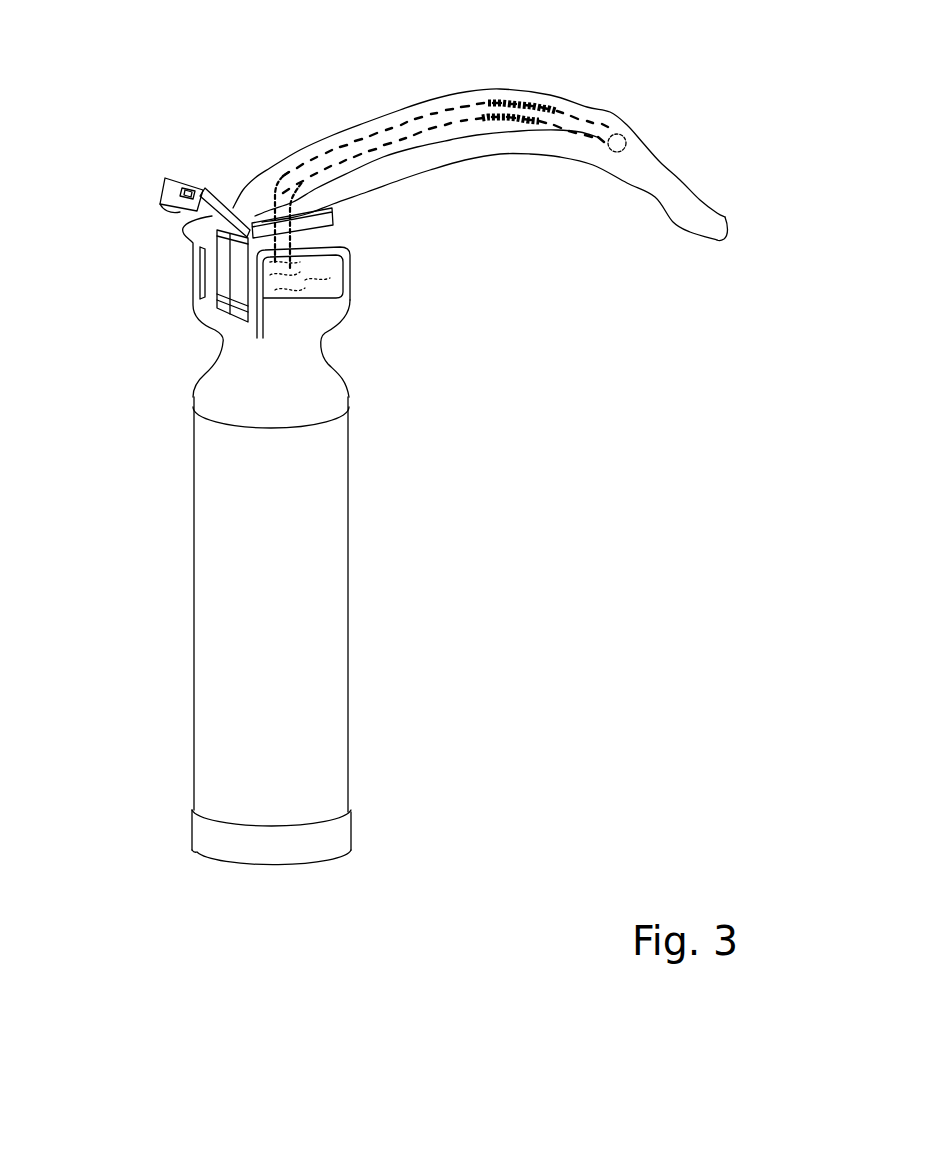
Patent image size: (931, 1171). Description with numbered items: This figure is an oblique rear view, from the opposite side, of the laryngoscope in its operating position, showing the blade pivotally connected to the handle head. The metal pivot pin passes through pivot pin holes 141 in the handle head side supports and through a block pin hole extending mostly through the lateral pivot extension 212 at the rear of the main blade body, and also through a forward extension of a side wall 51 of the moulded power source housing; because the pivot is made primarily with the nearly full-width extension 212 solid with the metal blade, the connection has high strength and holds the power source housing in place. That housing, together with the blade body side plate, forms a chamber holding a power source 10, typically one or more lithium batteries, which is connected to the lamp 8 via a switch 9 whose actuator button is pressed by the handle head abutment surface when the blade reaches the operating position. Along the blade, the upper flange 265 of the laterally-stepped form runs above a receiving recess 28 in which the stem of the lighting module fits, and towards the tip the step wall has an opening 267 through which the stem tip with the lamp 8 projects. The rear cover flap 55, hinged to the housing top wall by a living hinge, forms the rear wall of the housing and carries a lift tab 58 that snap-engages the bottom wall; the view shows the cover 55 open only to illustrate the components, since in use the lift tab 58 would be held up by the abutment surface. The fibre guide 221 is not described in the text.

The lamp 8 is at (614, 134).
The switch 9 is at (310, 303).
The power source 10 is at (238, 273).
The receiving recess 28 is at (439, 156).
The side wall 51 is at (270, 233).
The rear cover flap 55 is at (213, 198).
The lift tab 58 is at (165, 203).
The pivot pin hole 141 is at (330, 262).
The lateral pivot extension 212 is at (310, 212).
The light guide fibers 221 is at (468, 110).
The upper flange 265 is at (402, 113).
The opening 267 is at (530, 110).